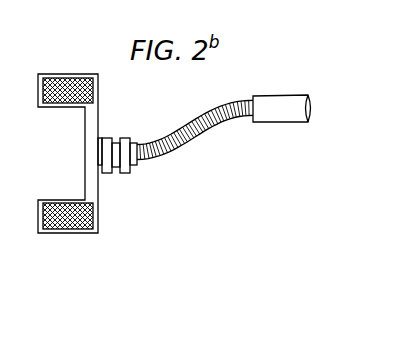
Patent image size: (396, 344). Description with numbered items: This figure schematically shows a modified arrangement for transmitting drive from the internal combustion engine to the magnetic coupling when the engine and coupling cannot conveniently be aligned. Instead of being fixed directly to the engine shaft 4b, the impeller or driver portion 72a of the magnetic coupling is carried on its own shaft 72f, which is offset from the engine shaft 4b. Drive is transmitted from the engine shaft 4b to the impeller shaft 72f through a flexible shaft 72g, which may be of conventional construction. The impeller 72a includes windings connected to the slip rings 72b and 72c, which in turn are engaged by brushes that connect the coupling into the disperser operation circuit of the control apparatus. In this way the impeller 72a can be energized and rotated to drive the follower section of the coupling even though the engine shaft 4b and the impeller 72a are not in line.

The impeller or driver portion 72a is at (93, 216).
The slip ring 72b is at (107, 138).
The slip ring 72c is at (127, 174).
The shaft of the impeller 72f is at (138, 168).
The flexible shaft 72g is at (183, 129).
The engine shaft 4b is at (298, 96).